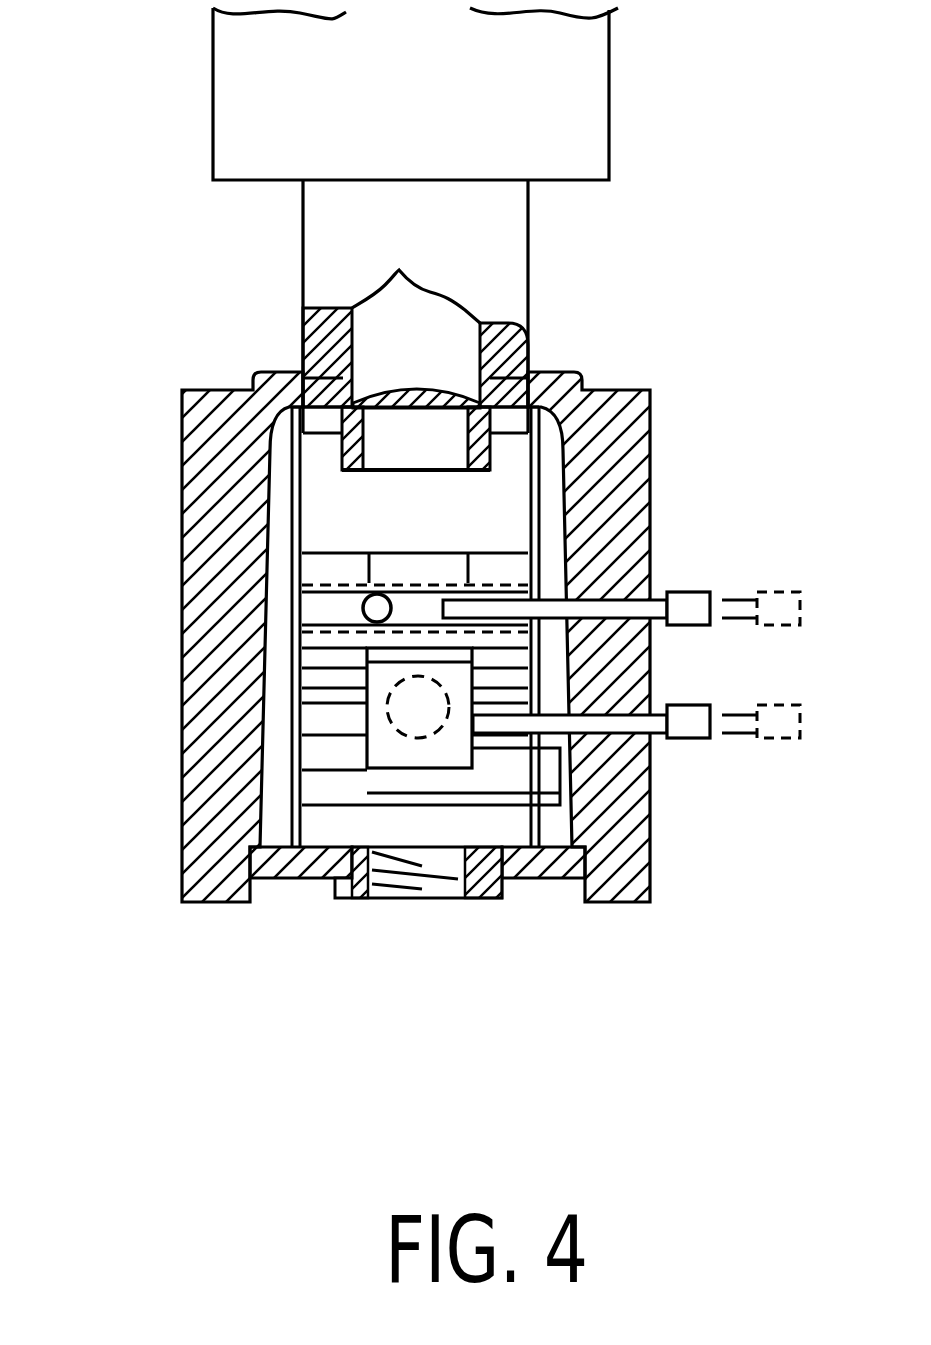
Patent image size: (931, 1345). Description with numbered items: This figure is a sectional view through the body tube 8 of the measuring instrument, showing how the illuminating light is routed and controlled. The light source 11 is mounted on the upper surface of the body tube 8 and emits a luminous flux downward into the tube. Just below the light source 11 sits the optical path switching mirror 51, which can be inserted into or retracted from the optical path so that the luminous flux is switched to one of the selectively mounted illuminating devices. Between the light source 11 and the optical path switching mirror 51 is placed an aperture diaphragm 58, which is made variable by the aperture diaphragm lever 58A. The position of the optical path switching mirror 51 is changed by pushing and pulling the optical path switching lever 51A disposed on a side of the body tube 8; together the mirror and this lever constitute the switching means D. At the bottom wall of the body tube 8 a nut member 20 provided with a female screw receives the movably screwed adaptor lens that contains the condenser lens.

The light source 11 is at (591, 77).
The body tube 8 is at (218, 388).
The aperture diaphragm 58 is at (345, 590).
The optical path switching mirror 51 is at (382, 742).
The aperture diaphragm lever 58A is at (800, 592).
The optical path switching lever 51A is at (800, 738).
The nut member 20 is at (480, 898).
The switching means D is at (671, 1000).